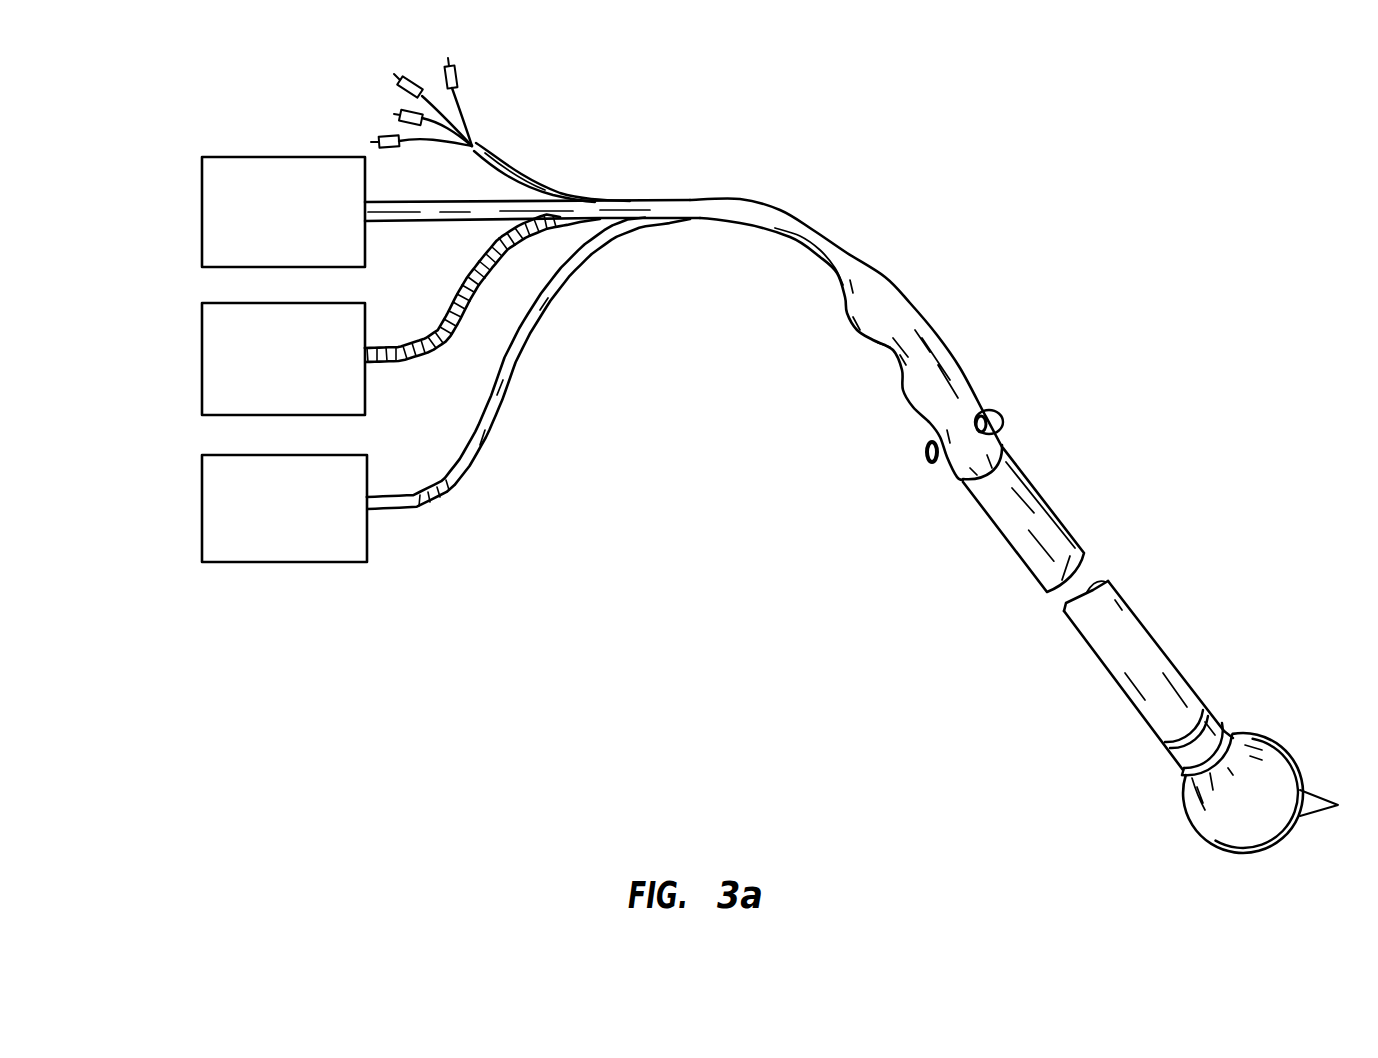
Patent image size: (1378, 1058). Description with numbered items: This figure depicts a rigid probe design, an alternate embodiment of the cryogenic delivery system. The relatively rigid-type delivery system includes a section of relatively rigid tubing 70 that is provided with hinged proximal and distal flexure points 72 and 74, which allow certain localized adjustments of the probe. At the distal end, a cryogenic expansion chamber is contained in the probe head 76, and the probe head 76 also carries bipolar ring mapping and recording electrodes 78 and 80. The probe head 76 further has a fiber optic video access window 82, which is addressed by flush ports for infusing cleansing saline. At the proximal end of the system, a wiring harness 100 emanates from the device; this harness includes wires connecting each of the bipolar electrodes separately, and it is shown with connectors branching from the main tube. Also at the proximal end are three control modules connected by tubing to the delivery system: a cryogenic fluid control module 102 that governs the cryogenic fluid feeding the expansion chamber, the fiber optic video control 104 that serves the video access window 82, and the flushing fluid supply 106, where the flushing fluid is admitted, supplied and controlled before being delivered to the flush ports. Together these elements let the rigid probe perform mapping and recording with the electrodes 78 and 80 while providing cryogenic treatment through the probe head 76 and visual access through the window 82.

The relatively rigid tubing 70 is at (1115, 603).
The proximal flexure point 72 is at (1000, 413).
The distal flexure point 74 is at (1206, 712).
The probe head 76 is at (1273, 758).
The bipolar ring mapping and recording electrode 78 is at (1183, 771).
The bipolar ring mapping and recording electrode 80 is at (1242, 853).
The fiber optic video access window 82 is at (1338, 805).
The wiring harness 100 is at (496, 152).
The cryogenic fluid control module 102 is at (219, 155).
The fiber optic video control 104 is at (212, 301).
The flushing fluid supply 106 is at (212, 454).